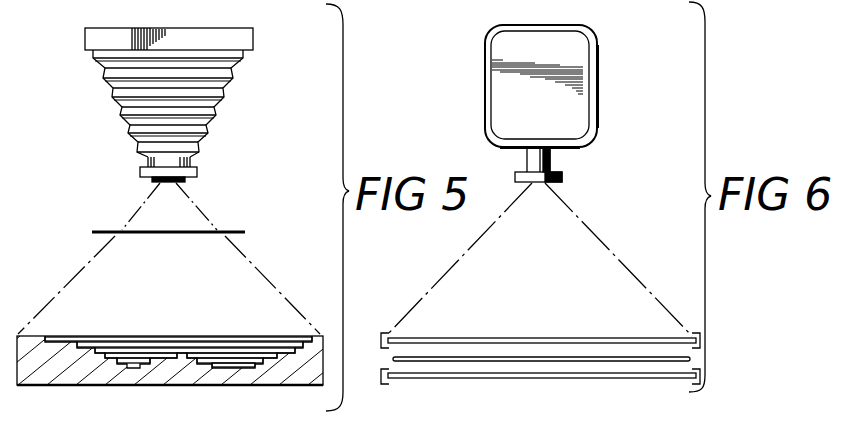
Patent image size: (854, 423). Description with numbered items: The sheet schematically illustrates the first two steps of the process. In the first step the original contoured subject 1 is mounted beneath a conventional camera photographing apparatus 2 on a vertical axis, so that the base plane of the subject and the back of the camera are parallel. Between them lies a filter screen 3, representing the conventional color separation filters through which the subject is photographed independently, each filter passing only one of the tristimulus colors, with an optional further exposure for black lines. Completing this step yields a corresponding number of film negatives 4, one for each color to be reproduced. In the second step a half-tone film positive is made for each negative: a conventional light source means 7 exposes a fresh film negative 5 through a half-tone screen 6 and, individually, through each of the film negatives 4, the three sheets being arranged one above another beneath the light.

In FIG. 5, the original contoured subject 1 is at (140, 336).
In FIG. 5, the camera photographing apparatus 2 is at (106, 97).
In FIG. 5, the filter screen 3 is at (110, 231).
In FIG. 6, the film negatives 4 is at (480, 337).
In FIG. 6, the fresh film negative 5 is at (592, 379).
In FIG. 6, the half-tone screen 6 is at (541, 357).
In FIG. 6, the light source means 7 is at (596, 116).